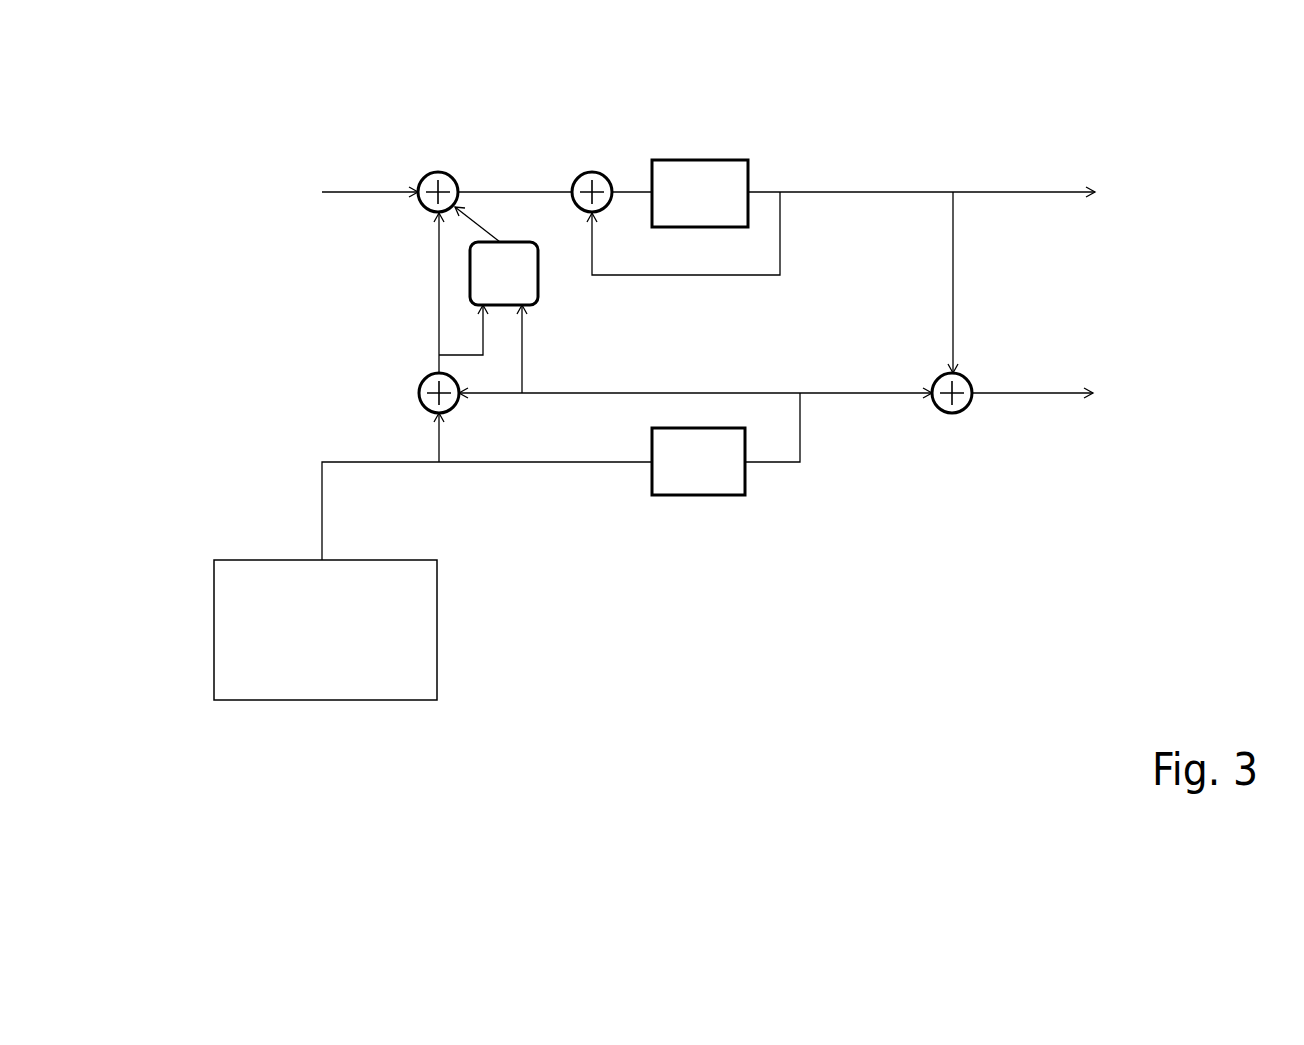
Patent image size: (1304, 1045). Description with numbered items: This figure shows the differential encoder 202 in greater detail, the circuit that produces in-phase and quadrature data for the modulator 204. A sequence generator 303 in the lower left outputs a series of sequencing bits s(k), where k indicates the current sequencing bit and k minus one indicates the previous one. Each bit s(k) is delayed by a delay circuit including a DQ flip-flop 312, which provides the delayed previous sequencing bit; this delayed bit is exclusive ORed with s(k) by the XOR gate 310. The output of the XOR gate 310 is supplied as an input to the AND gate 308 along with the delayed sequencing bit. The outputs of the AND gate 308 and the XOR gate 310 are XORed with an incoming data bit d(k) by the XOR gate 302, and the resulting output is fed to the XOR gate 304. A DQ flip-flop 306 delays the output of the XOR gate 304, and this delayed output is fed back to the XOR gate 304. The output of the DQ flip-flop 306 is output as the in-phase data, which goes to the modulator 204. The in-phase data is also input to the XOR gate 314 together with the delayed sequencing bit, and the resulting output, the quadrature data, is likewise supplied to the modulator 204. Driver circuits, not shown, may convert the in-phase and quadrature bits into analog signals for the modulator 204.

The differential encoder 202 is at (807, 812).
The modulator 204 is at (1219, 264).
The XOR gate 302 is at (443, 172).
The sequence generator 303 is at (437, 580).
The XOR gate 304 is at (605, 173).
The DQ flip-flop 306 is at (718, 158).
The AND gate 308 is at (540, 270).
The XOR gate 310 is at (421, 385).
The DQ flip-flop 312 is at (688, 495).
The XOR gate 314 is at (963, 412).